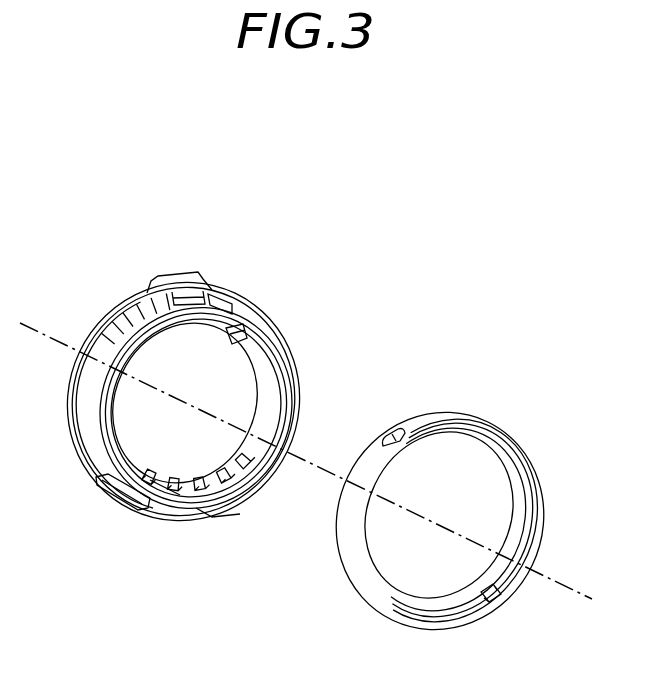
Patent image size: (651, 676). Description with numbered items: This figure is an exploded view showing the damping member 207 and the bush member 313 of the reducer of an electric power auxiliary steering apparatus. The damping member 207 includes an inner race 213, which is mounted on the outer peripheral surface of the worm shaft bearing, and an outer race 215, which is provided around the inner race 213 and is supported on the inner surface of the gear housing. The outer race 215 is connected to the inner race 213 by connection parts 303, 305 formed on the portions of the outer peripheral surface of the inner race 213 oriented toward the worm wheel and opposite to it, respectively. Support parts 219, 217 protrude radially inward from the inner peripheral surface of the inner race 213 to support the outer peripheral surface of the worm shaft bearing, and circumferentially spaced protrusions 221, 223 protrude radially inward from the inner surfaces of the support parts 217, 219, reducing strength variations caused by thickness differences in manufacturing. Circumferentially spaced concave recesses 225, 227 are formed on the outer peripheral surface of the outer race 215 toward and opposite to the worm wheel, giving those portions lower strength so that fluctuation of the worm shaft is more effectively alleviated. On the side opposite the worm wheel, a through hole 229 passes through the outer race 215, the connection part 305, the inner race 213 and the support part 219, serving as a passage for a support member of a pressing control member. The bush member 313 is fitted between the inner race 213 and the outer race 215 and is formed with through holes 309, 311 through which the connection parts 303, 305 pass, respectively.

The damping member 207 is at (123, 252).
The inner race 213 is at (290, 352).
The outer race 215 is at (306, 398).
The support part 217 is at (254, 491).
The support part 219 is at (246, 322).
The protrusions 221 is at (192, 482).
The protrusions 223 is at (226, 330).
The concave recesses 225 is at (212, 512).
The concave recesses 227 is at (107, 330).
The through hole 229 is at (213, 296).
The connection part 303 is at (172, 505).
The connection part 305 is at (238, 318).
The through hole 309 is at (495, 596).
The through hole 311 is at (400, 438).
The bush member 313 is at (530, 418).